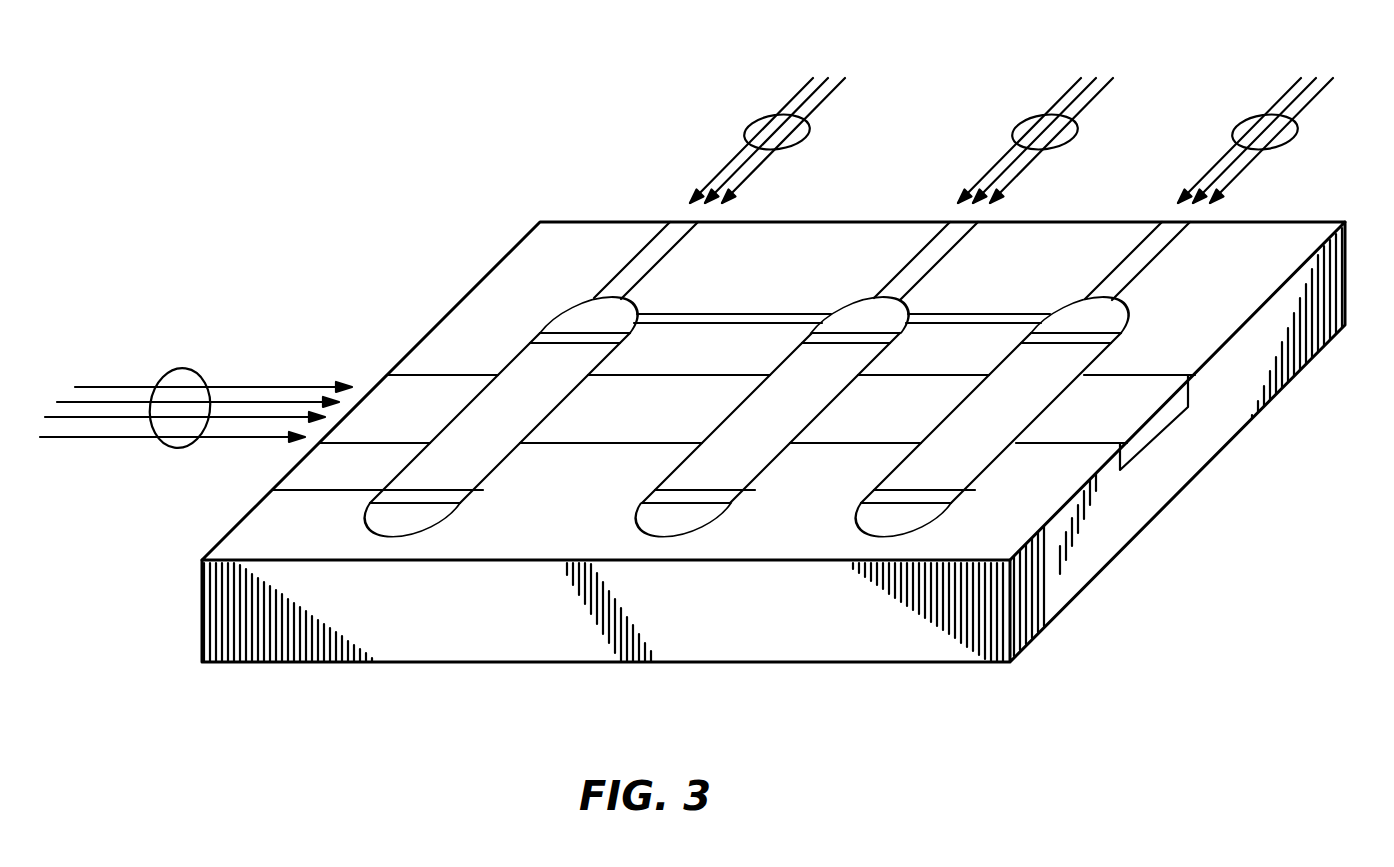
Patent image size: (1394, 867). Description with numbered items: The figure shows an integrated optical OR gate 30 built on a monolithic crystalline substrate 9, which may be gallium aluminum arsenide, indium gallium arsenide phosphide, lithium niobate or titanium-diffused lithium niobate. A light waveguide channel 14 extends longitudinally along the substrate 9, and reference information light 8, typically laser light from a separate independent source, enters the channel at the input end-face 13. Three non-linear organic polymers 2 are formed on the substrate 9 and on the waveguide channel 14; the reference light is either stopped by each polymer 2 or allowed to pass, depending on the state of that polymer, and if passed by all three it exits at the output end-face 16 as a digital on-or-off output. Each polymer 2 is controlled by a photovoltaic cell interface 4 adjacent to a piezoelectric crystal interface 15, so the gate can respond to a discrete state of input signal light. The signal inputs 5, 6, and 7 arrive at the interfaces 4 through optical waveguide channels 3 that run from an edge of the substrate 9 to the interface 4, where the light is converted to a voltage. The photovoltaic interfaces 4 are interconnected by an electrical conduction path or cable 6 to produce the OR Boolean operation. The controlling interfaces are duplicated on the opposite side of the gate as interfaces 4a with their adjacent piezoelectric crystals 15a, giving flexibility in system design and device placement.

The non-linear organic polymer 2 is at (490, 457).
The optical waveguide channel 3 is at (660, 258).
The photovoltaic cell interface 4 is at (575, 318).
The duplicated input signal controlling interface 4a is at (425, 523).
The signal input 5 is at (812, 132).
The signal input 6 is at (738, 316).
The signal input 7 is at (1300, 130).
The reference information light 8 is at (200, 372).
The monolithic substrate 9 is at (1050, 608).
The input end-face 13 is at (369, 393).
The light waveguide channel 14 is at (458, 386).
The piezoelectric crystal interface 15 is at (613, 336).
The piezoelectric crystal 15a is at (383, 492).
The output end-face 16 is at (1143, 441).
The integrated optical OR gate 30 is at (536, 168).